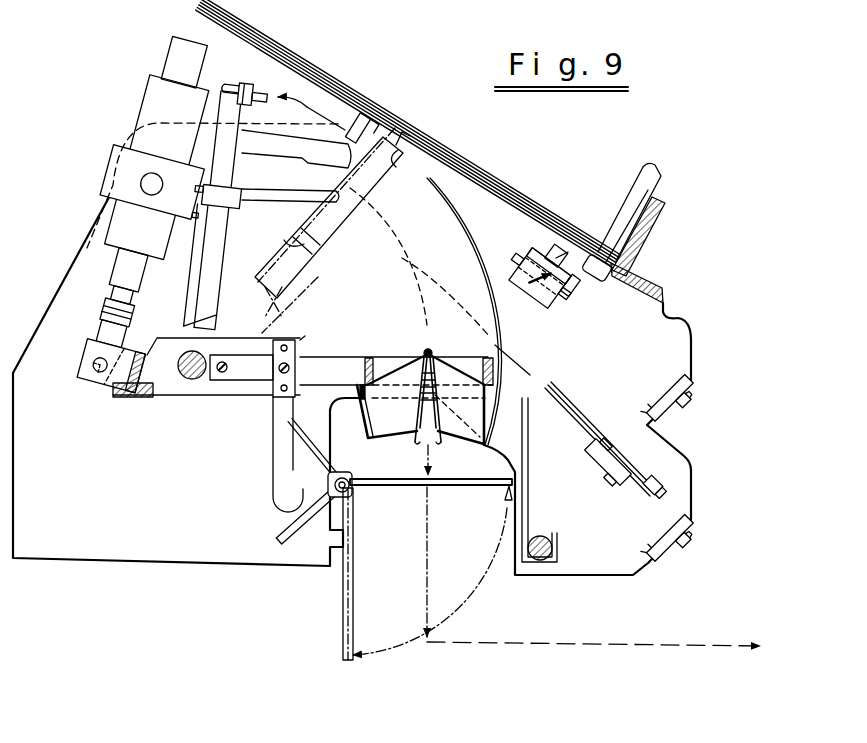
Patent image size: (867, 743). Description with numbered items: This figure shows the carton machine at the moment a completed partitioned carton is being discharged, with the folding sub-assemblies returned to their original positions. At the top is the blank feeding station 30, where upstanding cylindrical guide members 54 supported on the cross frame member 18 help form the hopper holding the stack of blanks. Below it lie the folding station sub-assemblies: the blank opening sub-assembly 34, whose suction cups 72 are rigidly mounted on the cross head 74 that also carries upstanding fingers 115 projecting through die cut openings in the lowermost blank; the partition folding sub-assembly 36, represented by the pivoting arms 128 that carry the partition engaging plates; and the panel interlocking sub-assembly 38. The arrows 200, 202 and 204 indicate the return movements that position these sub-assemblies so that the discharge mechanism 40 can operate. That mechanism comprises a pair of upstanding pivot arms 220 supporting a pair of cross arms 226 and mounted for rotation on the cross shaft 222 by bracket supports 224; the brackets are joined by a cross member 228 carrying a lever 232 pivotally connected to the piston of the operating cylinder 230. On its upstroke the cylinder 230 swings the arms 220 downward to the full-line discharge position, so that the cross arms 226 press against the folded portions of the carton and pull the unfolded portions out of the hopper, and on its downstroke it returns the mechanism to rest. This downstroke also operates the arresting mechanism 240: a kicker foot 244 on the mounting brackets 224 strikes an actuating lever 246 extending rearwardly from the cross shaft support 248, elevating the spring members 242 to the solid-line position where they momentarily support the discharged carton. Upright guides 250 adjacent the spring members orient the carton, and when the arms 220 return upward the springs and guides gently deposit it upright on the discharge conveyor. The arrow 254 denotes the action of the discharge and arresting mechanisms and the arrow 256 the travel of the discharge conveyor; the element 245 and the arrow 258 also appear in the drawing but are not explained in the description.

The cross frame member 18 is at (652, 240).
The blank feeding station 30 is at (581, 203).
The blank opening sub-assembly 34 is at (580, 314).
The partition folding sub-assembly 36 is at (252, 76).
The panel interlocking sub-assembly 38 is at (642, 460).
The discharge mechanism 40 is at (315, 330).
The upstanding cylindrical guide members 54 is at (645, 176).
The suction cups 72 is at (545, 243).
The cross head 74 is at (567, 272).
The upstanding fingers 115 is at (597, 277).
The arms 128 is at (198, 272).
The arrow 200 is at (530, 372).
The arrow 202 is at (307, 107).
The arrow 204 is at (522, 290).
The upstanding pivot arms 220 is at (401, 183).
The cross shaft 222 is at (192, 380).
The bracket supports 224 is at (178, 343).
The cross arms 226 is at (394, 167).
The cross member 228 is at (138, 397).
The operating cylinder 230 is at (147, 103).
The lever 232 is at (90, 356).
The arresting mechanism 240 is at (392, 530).
The spring members 242 is at (353, 522).
The kicker foot 244 is at (343, 478).
The bracket 245 is at (273, 478).
The actuating lever 246 is at (300, 436).
The cross shaft support 248 is at (336, 497).
The upright guides 250 is at (525, 478).
The arrow 254 is at (404, 262).
The arrow 256 is at (430, 612).
The discharge direction 258 is at (612, 645).